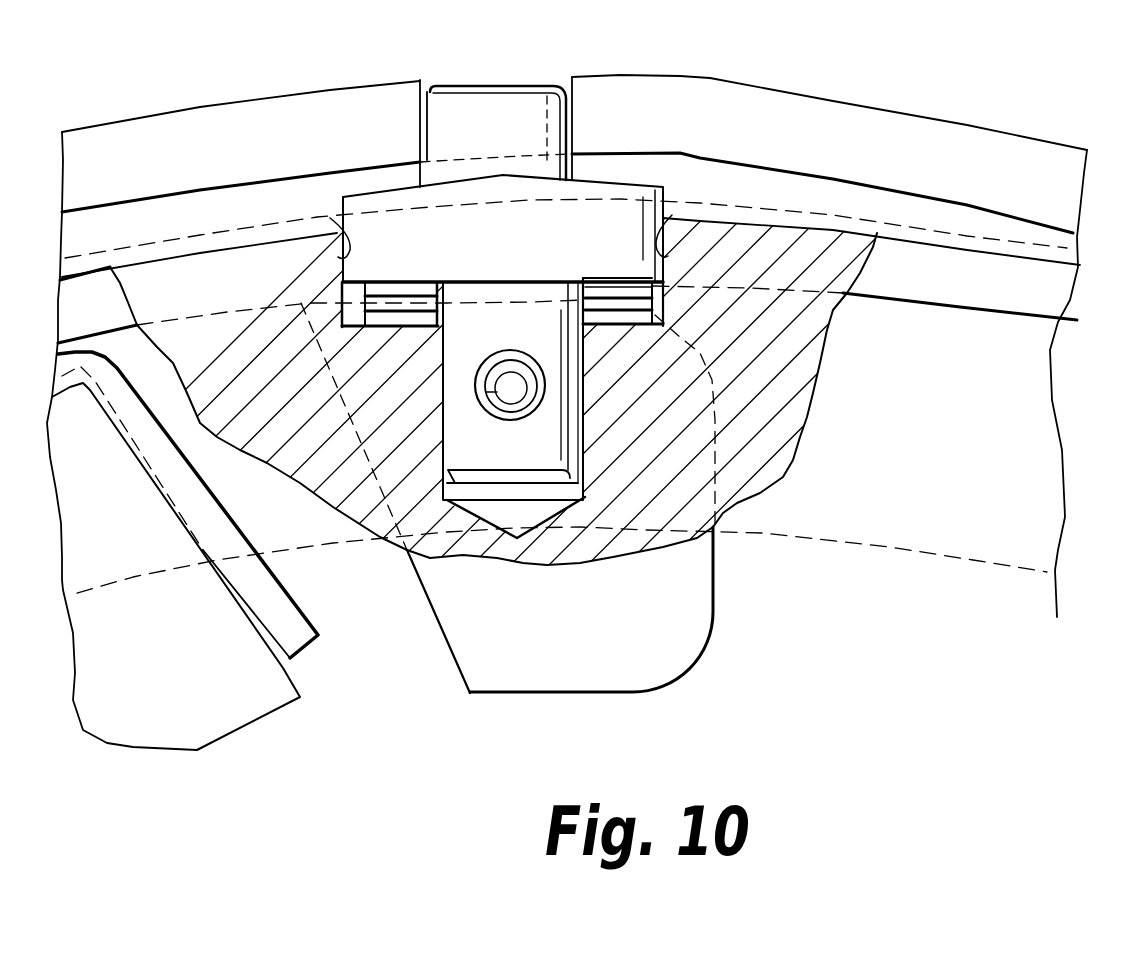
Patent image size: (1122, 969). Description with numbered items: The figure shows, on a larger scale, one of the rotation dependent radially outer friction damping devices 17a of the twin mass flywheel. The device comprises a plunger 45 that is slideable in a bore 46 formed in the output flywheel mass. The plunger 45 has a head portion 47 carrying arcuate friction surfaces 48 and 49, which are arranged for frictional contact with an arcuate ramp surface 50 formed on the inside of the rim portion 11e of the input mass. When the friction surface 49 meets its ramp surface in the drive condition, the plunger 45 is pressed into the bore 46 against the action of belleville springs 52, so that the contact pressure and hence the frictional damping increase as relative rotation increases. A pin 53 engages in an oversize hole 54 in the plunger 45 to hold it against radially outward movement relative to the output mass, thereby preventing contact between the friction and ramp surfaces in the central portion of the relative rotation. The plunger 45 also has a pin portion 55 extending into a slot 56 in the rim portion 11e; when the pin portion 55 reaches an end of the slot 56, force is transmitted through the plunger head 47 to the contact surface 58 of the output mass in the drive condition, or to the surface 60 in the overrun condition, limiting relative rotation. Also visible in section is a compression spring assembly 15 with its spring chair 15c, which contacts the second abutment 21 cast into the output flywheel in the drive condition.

The slot 56 is at (202, 128).
The head portion 47 is at (377, 203).
The arcuate friction surface 49 is at (398, 235).
The radially outer friction damping device 17a is at (460, 124).
The pin portion 55 is at (525, 110).
The arcuate friction surface 48 is at (613, 180).
The rim portion 11e is at (760, 85).
The arcuate ramp surface 50 is at (927, 193).
The surface on the output mass 60 is at (330, 218).
The contact surface 58 is at (672, 215).
The belleville springs 52 is at (640, 286).
The oversize hole 54 is at (485, 357).
The pin 53 is at (528, 388).
The plunger 45 is at (550, 342).
The bore 46 is at (583, 420).
The spring chair 15c is at (295, 629).
The compression spring assembly 15 is at (217, 690).
The second abutment 21 is at (570, 643).